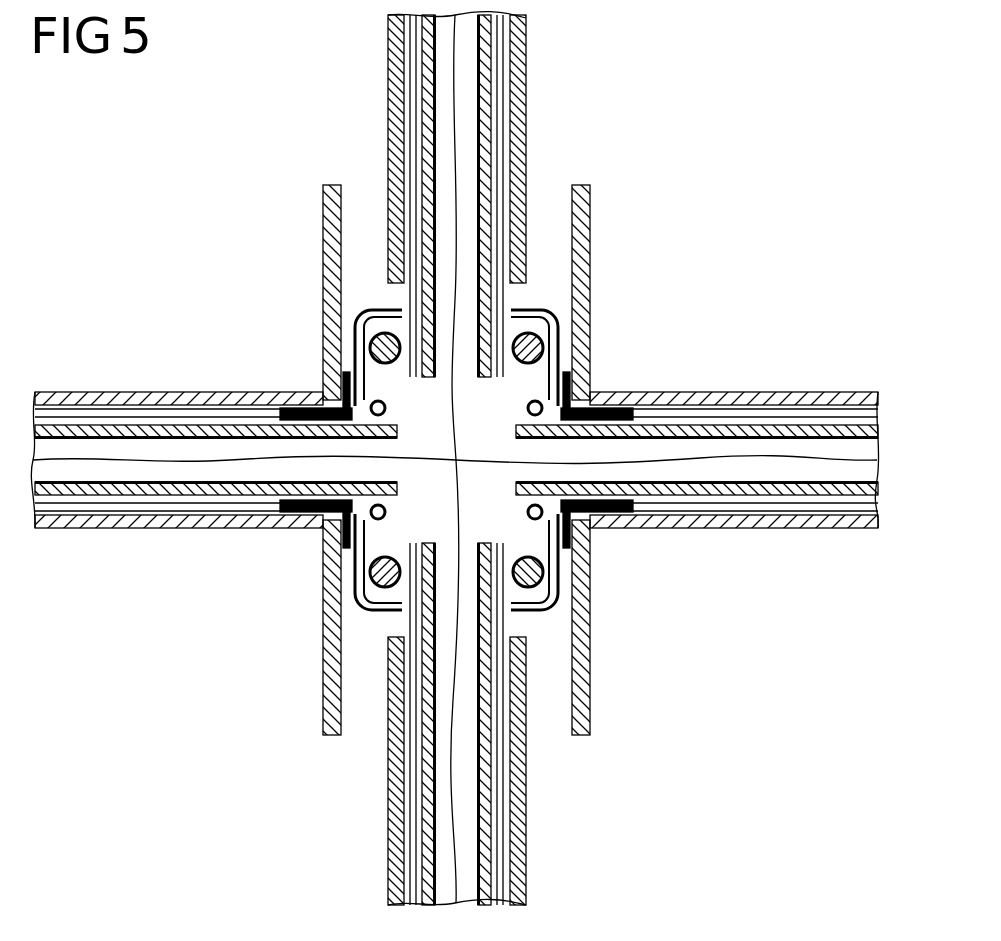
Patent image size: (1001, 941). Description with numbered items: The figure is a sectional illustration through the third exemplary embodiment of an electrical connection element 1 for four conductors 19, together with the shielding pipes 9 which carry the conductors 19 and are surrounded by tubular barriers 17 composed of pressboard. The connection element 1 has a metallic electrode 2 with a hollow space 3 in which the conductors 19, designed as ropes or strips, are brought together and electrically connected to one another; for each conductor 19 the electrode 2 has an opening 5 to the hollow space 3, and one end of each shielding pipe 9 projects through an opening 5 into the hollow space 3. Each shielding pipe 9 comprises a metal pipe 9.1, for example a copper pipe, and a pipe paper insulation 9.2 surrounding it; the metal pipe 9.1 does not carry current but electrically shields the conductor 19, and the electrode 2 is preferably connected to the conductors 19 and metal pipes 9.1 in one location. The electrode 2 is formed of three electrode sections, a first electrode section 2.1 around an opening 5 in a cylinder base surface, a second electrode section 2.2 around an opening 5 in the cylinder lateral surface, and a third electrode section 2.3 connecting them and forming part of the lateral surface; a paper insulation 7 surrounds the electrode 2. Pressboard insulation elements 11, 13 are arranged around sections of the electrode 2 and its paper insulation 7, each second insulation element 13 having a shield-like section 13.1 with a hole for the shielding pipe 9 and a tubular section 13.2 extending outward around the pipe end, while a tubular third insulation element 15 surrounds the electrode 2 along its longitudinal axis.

The electrical connection element 1 is at (318, 327).
The electrode 2 is at (683, 539).
The first electrode section 2.1 is at (590, 603).
The second electrode section 2.2 is at (585, 542).
The third electrode section 2.3 is at (588, 565).
The hollow space 3 is at (443, 505).
The opening 5 is at (515, 298).
The paper insulation 7 is at (370, 350).
The shielding pipe 9 is at (490, 118).
The metal pipe 9.1 is at (72, 503).
The pipe paper insulation 9.2 is at (133, 511).
The first insulation element 11 is at (378, 303).
The second insulation element 13 is at (587, 402).
The shield-like section 13.1 is at (578, 398).
The tubular section 13.2 is at (625, 408).
The third insulation element 15 is at (323, 222).
The tubular barrier 17 is at (392, 72).
The electrical conductor 19 is at (457, 72).